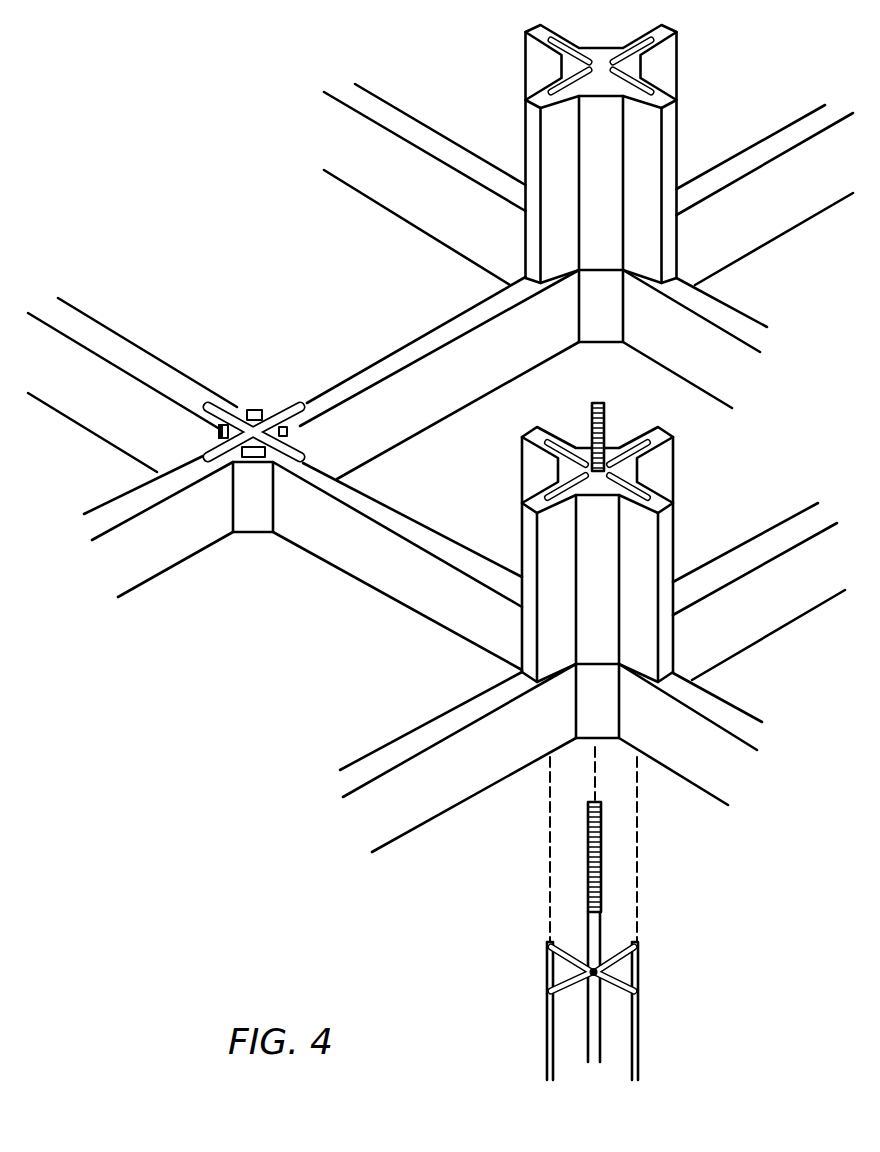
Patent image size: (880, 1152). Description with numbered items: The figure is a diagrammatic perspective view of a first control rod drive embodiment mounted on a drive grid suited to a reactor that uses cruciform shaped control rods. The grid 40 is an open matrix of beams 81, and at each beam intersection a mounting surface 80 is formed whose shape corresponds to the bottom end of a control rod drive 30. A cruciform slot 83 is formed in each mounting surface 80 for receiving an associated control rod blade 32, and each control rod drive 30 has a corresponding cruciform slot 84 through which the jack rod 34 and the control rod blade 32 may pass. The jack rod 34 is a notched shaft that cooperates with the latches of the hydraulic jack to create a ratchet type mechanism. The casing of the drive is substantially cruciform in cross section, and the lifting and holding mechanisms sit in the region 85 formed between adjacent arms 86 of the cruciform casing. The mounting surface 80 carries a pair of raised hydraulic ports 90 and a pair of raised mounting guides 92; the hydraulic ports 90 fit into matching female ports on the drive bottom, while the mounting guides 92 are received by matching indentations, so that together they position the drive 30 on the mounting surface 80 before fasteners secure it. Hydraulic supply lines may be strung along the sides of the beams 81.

The control rod drive 30 is at (727, 80).
The control rod blade 32 is at (617, 1012).
The jack rod 34 is at (605, 416).
The grid 40 is at (412, 345).
The mounting surface 80 is at (232, 408).
The beams 81 is at (120, 494).
The cruciform slot 83 is at (212, 457).
The cruciform slot 84 is at (549, 451).
The region 85 is at (597, 491).
The arms 86 is at (666, 536).
The raised hydraulic ports 90 is at (217, 432).
The raised mounting guides 92 is at (292, 431).